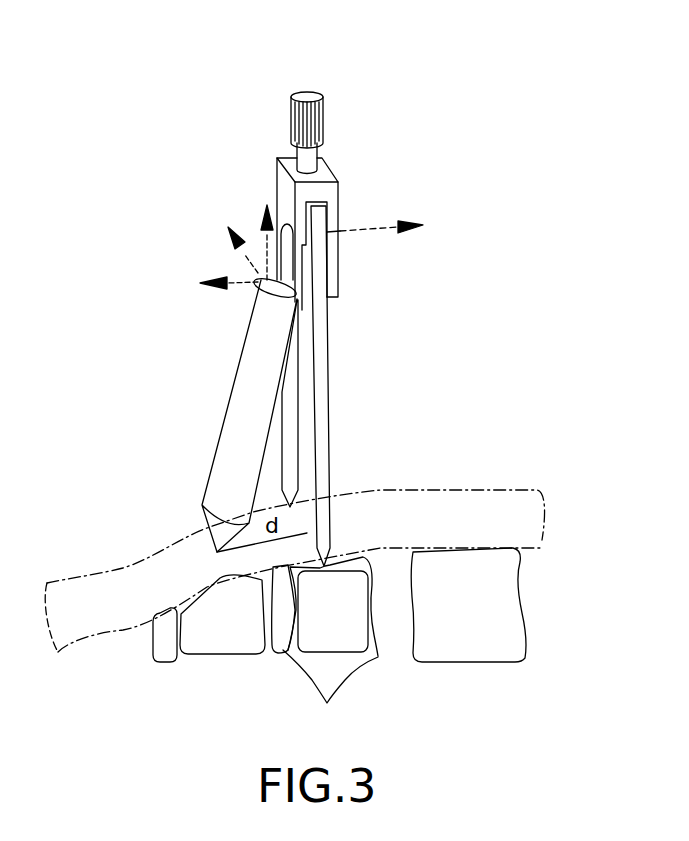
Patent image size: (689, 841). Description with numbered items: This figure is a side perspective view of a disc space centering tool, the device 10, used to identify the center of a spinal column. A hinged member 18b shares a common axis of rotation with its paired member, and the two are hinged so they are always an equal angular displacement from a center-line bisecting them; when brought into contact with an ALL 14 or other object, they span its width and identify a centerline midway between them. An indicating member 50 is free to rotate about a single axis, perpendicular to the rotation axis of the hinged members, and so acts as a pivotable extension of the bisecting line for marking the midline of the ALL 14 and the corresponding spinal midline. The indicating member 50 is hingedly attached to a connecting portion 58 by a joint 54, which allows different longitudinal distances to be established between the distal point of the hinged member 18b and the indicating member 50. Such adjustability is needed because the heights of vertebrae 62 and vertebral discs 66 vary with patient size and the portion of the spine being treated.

The device 10 is at (212, 73).
The ALL 14 is at (543, 550).
The hinged member 18b is at (326, 420).
The indicating member 50 is at (237, 407).
The joint 54 is at (257, 276).
The connecting portion 58 is at (330, 168).
The vertebrae 62 is at (360, 558).
The vertebral discs 66 is at (330, 691).